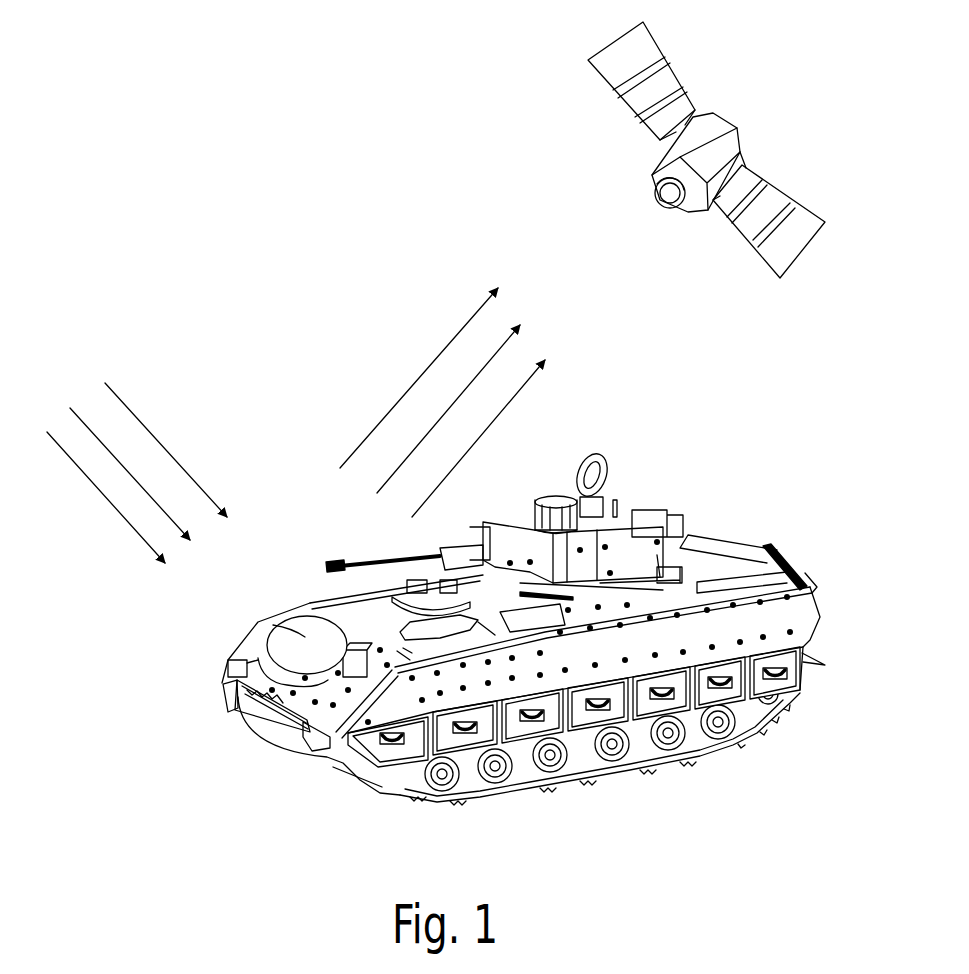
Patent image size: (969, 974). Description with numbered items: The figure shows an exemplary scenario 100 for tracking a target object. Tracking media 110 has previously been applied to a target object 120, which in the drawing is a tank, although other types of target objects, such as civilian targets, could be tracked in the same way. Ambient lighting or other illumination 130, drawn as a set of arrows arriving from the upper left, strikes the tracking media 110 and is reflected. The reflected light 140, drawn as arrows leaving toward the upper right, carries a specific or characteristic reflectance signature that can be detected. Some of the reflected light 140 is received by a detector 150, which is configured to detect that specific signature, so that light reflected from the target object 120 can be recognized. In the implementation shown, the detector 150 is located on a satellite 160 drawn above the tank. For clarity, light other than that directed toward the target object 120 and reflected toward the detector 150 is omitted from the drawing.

The scenario 100 is at (200, 151).
The tracking media 110 is at (273, 625).
The target object 120 is at (800, 598).
The illumination 130 is at (120, 518).
The reflected light 140 is at (428, 367).
The detector 150 is at (686, 210).
The satellite 160 is at (742, 133).